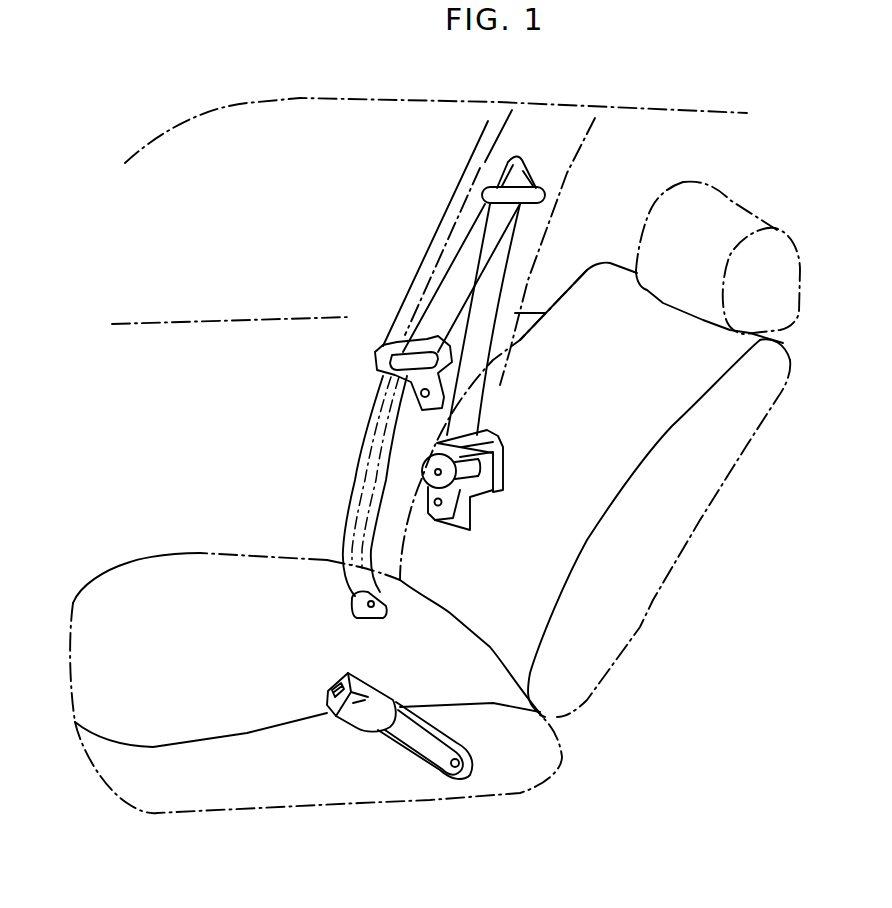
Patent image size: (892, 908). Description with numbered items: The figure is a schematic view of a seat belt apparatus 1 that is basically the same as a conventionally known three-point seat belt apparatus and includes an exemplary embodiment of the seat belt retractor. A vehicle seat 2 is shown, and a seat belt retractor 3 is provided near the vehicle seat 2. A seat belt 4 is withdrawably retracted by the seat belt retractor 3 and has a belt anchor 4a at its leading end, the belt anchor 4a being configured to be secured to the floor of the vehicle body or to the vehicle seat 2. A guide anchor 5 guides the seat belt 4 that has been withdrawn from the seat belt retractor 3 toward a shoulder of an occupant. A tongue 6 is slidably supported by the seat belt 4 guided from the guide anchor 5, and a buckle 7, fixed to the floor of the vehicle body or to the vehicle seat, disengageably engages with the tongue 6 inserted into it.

The seat belt apparatus 1 is at (543, 557).
The vehicle seat 2 is at (198, 782).
The seat belt retractor 3 is at (503, 470).
The seat belt 4 is at (460, 287).
The belt anchor 4a is at (378, 618).
The guide anchor 5 is at (523, 172).
The tongue 6 is at (375, 362).
The buckle 7 is at (335, 716).